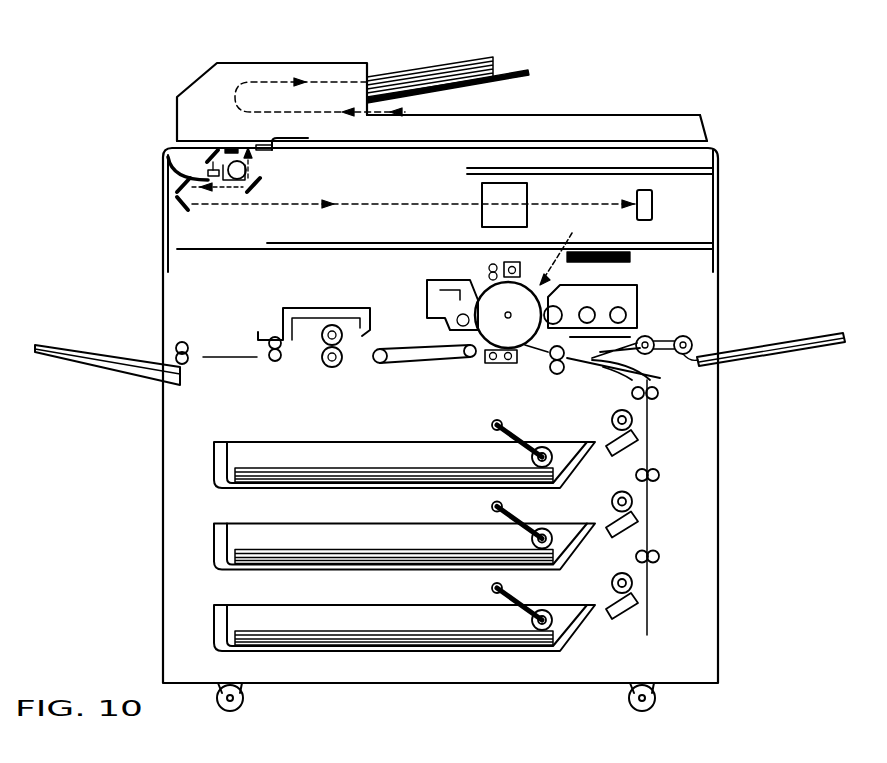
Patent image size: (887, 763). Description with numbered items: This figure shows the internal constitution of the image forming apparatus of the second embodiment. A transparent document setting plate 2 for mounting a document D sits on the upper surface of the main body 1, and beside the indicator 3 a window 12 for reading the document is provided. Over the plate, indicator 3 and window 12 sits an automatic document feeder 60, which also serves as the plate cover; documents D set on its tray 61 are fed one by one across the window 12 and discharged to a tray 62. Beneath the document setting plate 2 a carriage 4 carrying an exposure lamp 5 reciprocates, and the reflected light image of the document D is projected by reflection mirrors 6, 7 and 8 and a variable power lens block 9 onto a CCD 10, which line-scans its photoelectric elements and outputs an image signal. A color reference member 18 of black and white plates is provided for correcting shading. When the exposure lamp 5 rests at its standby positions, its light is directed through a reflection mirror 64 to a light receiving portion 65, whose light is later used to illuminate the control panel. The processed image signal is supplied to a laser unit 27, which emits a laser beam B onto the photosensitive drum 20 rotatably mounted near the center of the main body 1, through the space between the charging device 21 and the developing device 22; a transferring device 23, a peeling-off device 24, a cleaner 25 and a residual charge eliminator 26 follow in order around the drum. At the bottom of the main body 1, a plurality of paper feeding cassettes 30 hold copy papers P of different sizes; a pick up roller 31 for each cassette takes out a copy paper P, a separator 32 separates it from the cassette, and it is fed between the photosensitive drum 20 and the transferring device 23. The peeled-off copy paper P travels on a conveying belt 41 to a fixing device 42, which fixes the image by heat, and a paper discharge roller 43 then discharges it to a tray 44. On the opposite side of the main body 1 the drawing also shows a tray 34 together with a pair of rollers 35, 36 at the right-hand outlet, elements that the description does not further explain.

The main body 1 is at (723, 202).
The document setting plate 2 is at (460, 142).
The indicator 3 is at (306, 137).
The carriage 4 is at (175, 165).
The exposure lamp 5 is at (250, 175).
The reflection mirror 6 is at (262, 188).
The reflection mirror 7 is at (178, 183).
The reflection mirror 8 is at (192, 208).
The variable power lens block 9 is at (528, 190).
The CCD 10 is at (653, 212).
The window 12 is at (270, 150).
The color reference member 18 is at (229, 148).
The photosensitive drum 20 is at (492, 283).
The charging device 21 is at (524, 262).
The developing device 22 is at (618, 285).
The transferring device 23 is at (507, 363).
The peeling-off device 24 is at (487, 363).
The cleaner 25 is at (427, 302).
The residual charge eliminator 26 is at (484, 264).
The laser unit 27 is at (633, 257).
The paper feeding cassette 30 is at (215, 462).
The pick up roller 31 is at (552, 444).
The separator 32 is at (618, 413).
The exit tray 34 is at (817, 335).
The exit roller 35 is at (687, 336).
The exit roller 36 is at (650, 336).
The conveying belt 41 is at (403, 348).
The fixing device 42 is at (322, 308).
The paper discharge roller 43 is at (182, 342).
The tray 44 is at (98, 368).
The automatic document feeder 60 is at (310, 63).
The tray 61 is at (517, 73).
The tray 62 is at (607, 115).
The reflection mirror 64 is at (208, 147).
The light receiving portion 65 is at (208, 171).
The laser beam B is at (566, 247).
The document D is at (452, 63).
The copy paper P is at (350, 467).